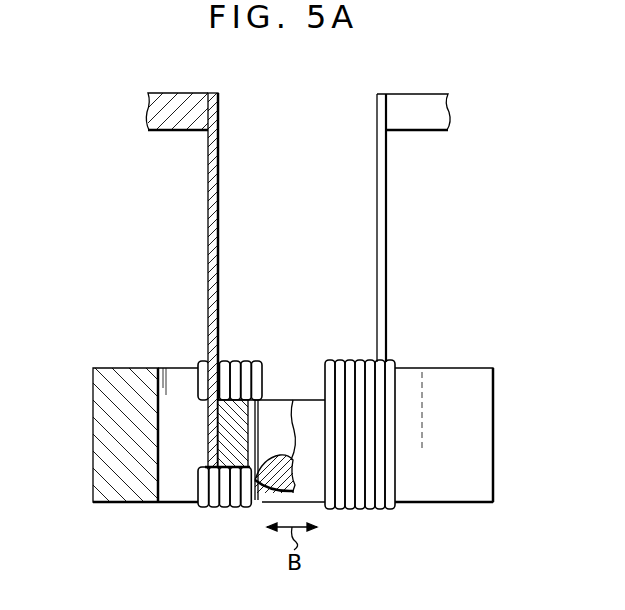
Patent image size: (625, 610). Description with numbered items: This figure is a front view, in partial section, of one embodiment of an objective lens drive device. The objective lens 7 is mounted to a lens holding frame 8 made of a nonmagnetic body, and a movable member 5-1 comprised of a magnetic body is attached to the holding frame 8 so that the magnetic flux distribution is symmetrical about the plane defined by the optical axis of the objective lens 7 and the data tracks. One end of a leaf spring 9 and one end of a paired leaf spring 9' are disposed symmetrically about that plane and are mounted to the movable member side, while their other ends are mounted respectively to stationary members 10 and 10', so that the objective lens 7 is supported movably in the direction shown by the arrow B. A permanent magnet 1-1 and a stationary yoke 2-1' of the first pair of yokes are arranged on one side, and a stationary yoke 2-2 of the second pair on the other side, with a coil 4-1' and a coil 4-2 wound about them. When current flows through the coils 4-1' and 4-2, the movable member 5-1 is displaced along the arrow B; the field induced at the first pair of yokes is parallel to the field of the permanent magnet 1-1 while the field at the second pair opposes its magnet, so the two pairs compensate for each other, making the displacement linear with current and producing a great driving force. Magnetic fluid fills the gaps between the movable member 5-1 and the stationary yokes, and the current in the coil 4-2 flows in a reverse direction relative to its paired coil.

The permanent magnet 1-1 is at (100, 455).
The stationary yoke 2-1' is at (174, 412).
The stationary yoke 2-2 is at (477, 465).
The coil 4-1' is at (219, 458).
The first coil 4-2 is at (376, 508).
The movable member 5-1 is at (222, 420).
The objective lens 7 is at (271, 451).
The lens holding frame 8 is at (252, 410).
The leaf spring 9 is at (190, 280).
The leaf spring 9' is at (407, 228).
The stationary member 10 is at (153, 111).
The stationary member 10' is at (445, 112).